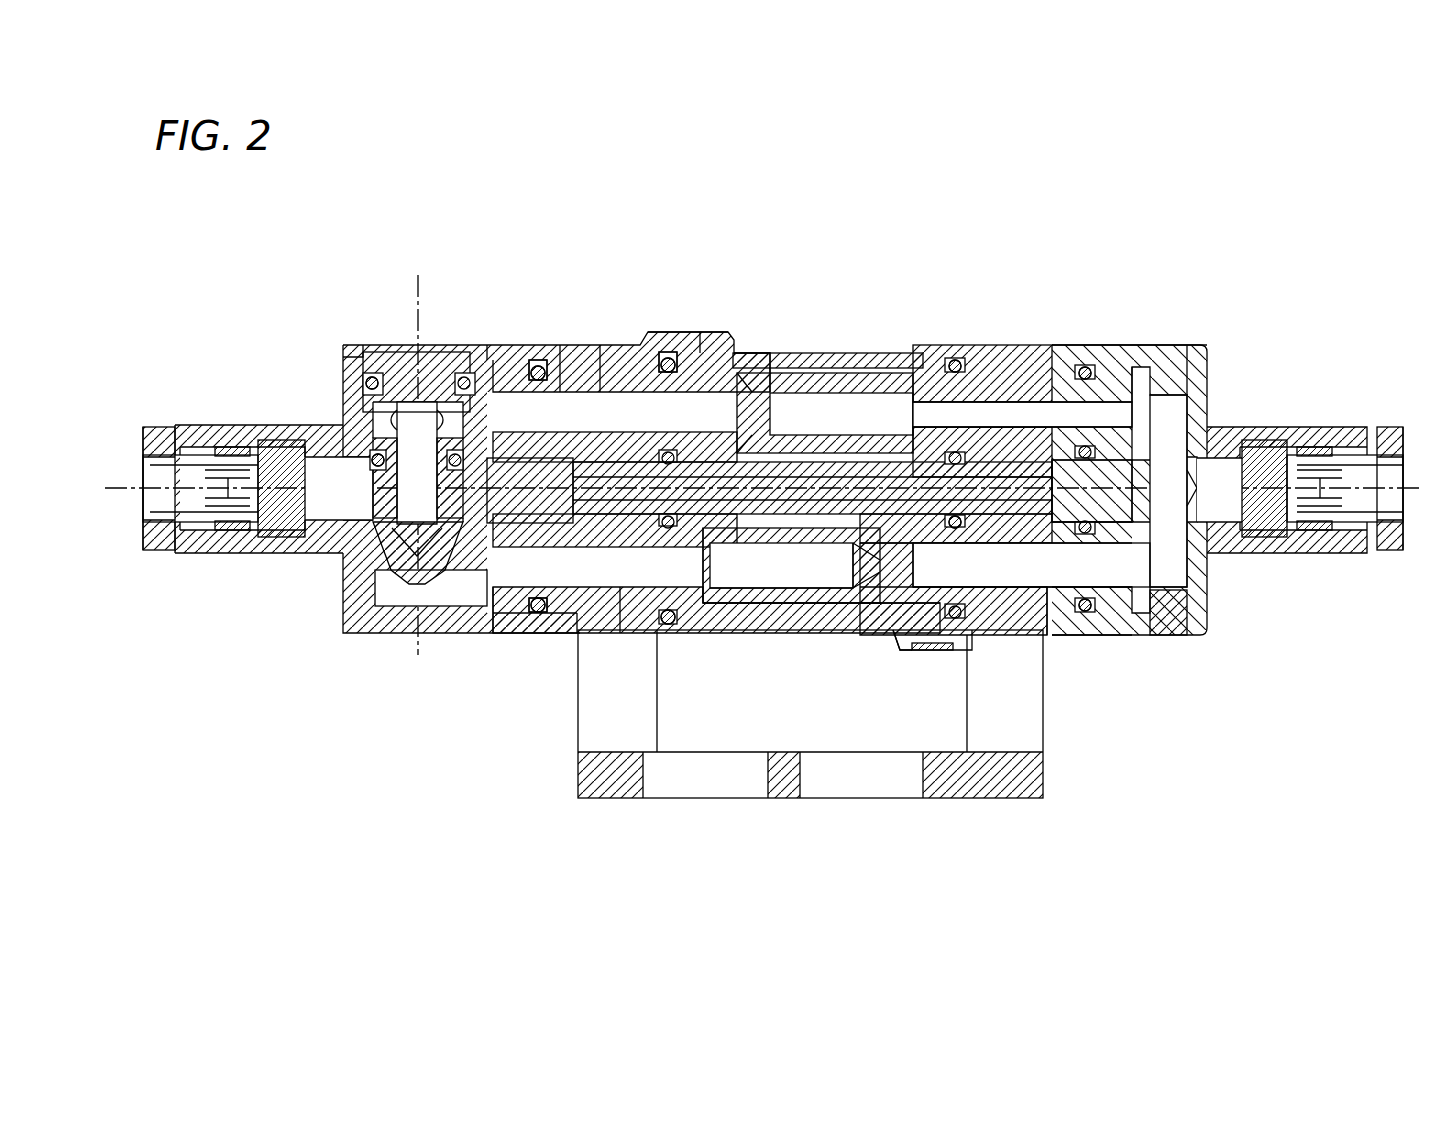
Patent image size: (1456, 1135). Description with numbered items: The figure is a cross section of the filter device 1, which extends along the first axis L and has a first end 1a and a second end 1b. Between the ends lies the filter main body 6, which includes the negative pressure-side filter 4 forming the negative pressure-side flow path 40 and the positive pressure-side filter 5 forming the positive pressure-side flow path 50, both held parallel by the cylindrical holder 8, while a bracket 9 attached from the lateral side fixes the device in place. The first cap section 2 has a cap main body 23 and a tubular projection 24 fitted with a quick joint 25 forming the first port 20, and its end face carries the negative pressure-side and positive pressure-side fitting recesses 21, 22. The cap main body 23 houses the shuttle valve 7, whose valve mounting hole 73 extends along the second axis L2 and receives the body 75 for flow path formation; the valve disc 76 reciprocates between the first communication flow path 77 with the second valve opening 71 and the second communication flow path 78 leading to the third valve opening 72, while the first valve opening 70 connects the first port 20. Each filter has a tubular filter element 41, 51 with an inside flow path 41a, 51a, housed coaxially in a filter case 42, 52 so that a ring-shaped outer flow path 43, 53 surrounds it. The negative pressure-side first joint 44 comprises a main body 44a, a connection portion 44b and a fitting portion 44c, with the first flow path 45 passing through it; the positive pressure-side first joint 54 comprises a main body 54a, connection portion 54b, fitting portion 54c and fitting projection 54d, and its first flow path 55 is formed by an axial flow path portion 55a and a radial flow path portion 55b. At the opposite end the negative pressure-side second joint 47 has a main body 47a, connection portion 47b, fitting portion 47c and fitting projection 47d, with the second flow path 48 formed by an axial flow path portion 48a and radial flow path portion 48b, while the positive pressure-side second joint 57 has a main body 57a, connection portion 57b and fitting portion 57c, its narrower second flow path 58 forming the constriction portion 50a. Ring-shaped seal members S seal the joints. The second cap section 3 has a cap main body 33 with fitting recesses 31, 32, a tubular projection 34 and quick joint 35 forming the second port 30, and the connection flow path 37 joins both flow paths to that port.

The filter device 1 is at (773, 517).
The first end 1a is at (134, 451).
The second end 1b is at (1421, 453).
The first cap section 2 is at (232, 526).
The second cap section 3 is at (1326, 522).
The negative pressure-side filter 4 is at (817, 646).
The positive pressure-side filter 5 is at (835, 335).
The filter main body 6 is at (769, 502).
The shuttle valve 7 is at (497, 333).
The holder 8 is at (1007, 493).
The bracket 9 is at (829, 777).
The first port 20 is at (176, 503).
The negative pressure-side fitting recess 21 is at (539, 613).
The positive pressure-side fitting recess 22 is at (595, 345).
The cap main body 23 is at (432, 633).
The tubular projection 24 is at (235, 440).
The quick joint 25 is at (165, 551).
The second port 30 is at (1380, 510).
The negative pressure-side fitting recess 31 is at (1118, 598).
The positive pressure-side fitting recess 32 is at (1082, 364).
The cap main body 33 is at (1178, 395).
The tubular projection 34 is at (1323, 552).
The quick joint 35 is at (1392, 430).
The connection flow path 37 is at (1165, 428).
The negative pressure-side flow path 40 is at (1175, 622).
The negative pressure-side filter element 41 is at (720, 605).
The negative pressure-side inside flow path 41a is at (763, 586).
The negative pressure-side filter case 42 is at (785, 604).
The negative pressure-side ring-shaped outer flow path 43 is at (748, 604).
The negative pressure-side first joint 44 is at (600, 636).
The main body 44a is at (590, 634).
The connection portion 44b is at (505, 603).
The fitting portion 44c is at (700, 624).
The negative pressure-side first flow path 45 is at (632, 633).
The negative pressure-side second joint 47 is at (1040, 670).
The main body 47a is at (1037, 625).
The connection portion 47b is at (1115, 538).
The fitting portion 47c is at (983, 640).
The fitting projection 47d is at (862, 636).
The negative pressure-side second flow path 48 is at (865, 862).
The axial flow path portion 48a is at (945, 652).
The radial flow path portion 48b is at (893, 652).
The positive pressure-side flow path 50 is at (1139, 417).
The constriction portion 50a is at (1092, 371).
The positive pressure-side filter element 51 is at (860, 373).
The positive pressure-side inside flow path 51a is at (808, 426).
The positive pressure-side filter case 52 is at (893, 348).
The positive pressure-side ring-shaped outer flow path 53 is at (798, 353).
The positive pressure-side first joint 54 is at (585, 333).
The main body 54a is at (612, 388).
The connection portion 54b is at (531, 366).
The fitting portion 54c is at (692, 340).
The fitting projection 54d is at (762, 352).
The positive pressure-side first flow path 55 is at (776, 187).
The axial flow path portion 55a is at (660, 352).
The radial flow path portion 55b is at (728, 345).
The positive pressure-side second joint 57 is at (1003, 333).
The main body 57a is at (1010, 400).
The connection portion 57b is at (1140, 395).
The fitting portion 57c is at (938, 358).
The positive pressure-side second flow path 58 is at (1032, 380).
The first valve opening 70 is at (362, 497).
The second valve opening 71 is at (472, 606).
The third valve opening 72 is at (455, 372).
The valve mounting hole 73 is at (360, 345).
The body for flow path formation 75 is at (403, 402).
The valve disc 76 is at (372, 590).
The first communication flow path 77 is at (400, 582).
The second communication flow path 78 is at (352, 440).
The first axis L is at (778, 488).
The second axis L2 is at (418, 444).
The ring-shaped seal member S is at (368, 378).